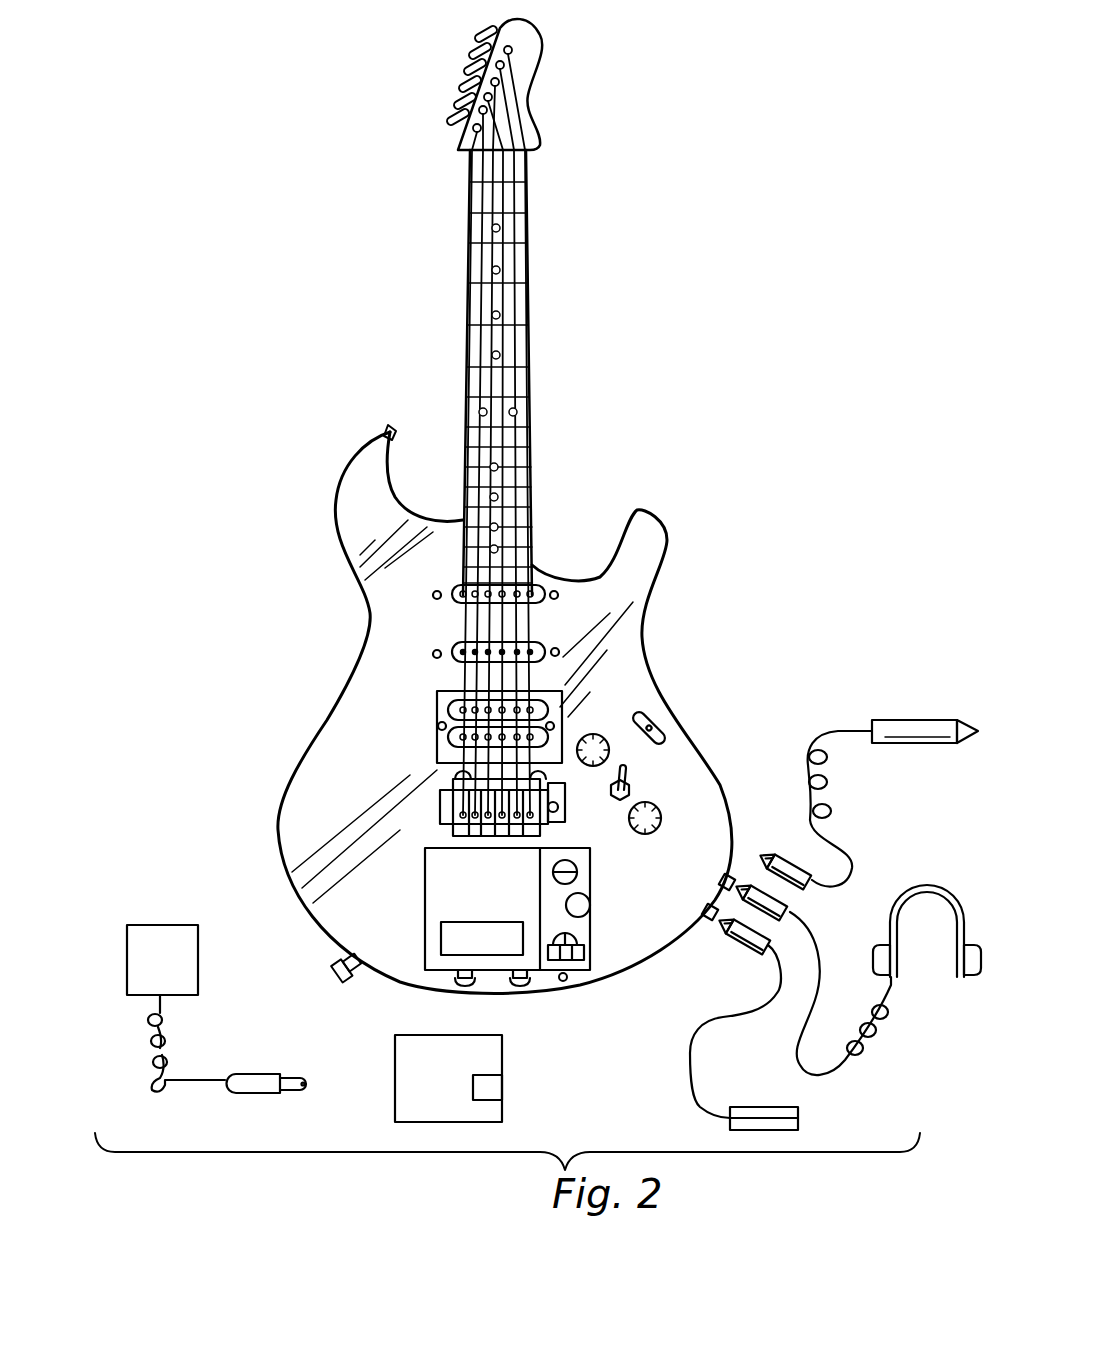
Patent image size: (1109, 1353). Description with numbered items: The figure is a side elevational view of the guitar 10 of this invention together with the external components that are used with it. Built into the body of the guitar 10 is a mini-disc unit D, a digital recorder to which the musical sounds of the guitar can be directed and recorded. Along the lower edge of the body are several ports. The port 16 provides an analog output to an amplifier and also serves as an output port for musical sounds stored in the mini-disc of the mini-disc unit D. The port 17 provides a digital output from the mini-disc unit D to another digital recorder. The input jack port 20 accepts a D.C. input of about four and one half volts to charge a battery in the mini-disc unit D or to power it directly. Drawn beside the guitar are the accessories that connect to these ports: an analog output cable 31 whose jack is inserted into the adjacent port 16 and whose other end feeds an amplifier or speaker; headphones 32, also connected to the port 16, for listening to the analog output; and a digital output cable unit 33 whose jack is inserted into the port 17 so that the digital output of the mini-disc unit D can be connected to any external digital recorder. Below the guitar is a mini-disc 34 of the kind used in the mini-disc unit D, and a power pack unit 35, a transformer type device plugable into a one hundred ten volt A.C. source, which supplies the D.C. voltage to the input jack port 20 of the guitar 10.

The guitar 10 is at (600, 297).
The port 16 is at (728, 876).
The port 17 is at (708, 920).
The input jack port 20 is at (566, 983).
The analog output cable 31 is at (832, 772).
The headphones 32 is at (892, 995).
The digital output cable unit 33 is at (712, 1118).
The mini-disc 34 is at (385, 1077).
The power pack unit 35 is at (186, 918).
The mini-disc unit D is at (398, 916).